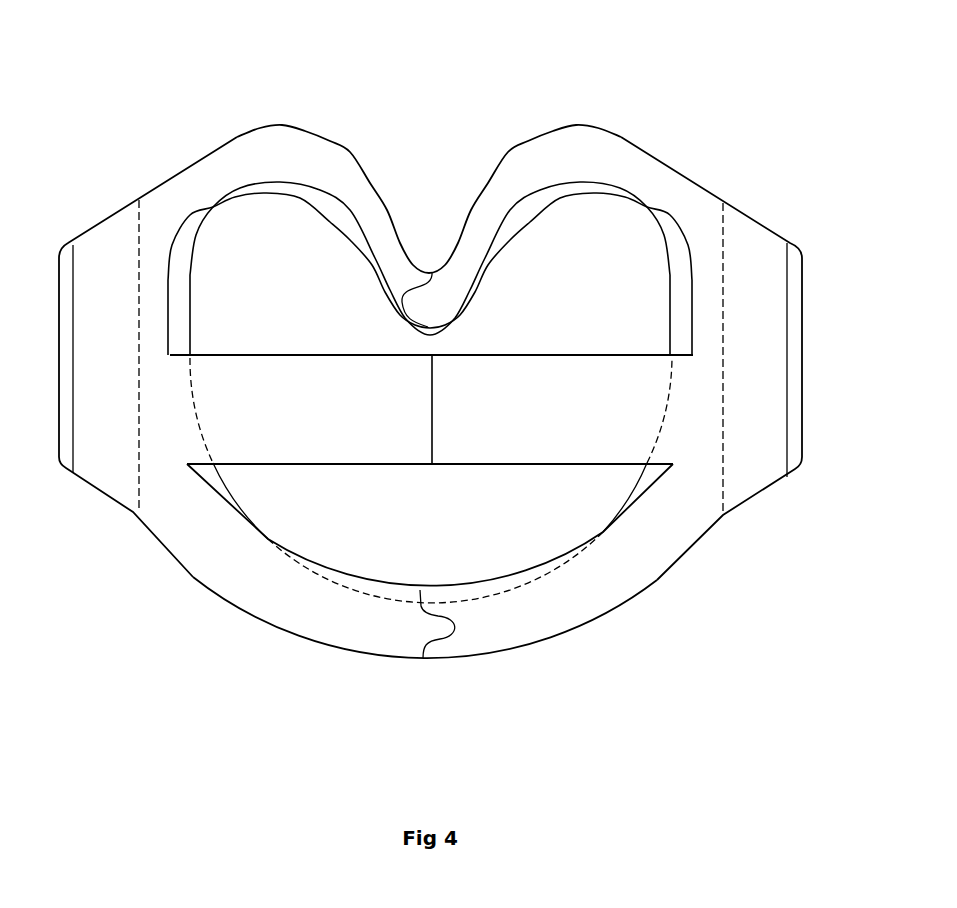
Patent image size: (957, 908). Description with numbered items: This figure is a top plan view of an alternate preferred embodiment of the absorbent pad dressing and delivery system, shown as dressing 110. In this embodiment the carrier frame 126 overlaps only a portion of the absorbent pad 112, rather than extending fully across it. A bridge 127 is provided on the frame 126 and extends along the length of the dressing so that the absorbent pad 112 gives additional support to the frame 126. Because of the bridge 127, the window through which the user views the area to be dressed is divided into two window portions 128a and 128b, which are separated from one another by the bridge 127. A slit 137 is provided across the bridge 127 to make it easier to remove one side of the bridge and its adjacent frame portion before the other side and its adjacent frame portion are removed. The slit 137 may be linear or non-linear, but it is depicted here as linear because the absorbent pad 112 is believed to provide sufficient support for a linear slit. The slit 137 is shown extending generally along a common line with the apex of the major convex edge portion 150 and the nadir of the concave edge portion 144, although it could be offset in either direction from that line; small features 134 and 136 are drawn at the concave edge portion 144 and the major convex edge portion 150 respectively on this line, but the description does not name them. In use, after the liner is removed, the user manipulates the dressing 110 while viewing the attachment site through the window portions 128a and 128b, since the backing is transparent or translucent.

The dressing 110 is at (430, 379).
The absorbent pad 112 is at (657, 270).
The carrier frame 126 is at (202, 565).
The bridge 127 is at (527, 430).
The window portion 128a is at (680, 310).
The window portion 128b is at (615, 493).
The upper tab 134 is at (432, 272).
The lower tab 136 is at (446, 638).
The slit 137 is at (432, 418).
The concave edge portion 144 is at (387, 207).
The major convex edge portion 150 is at (355, 653).